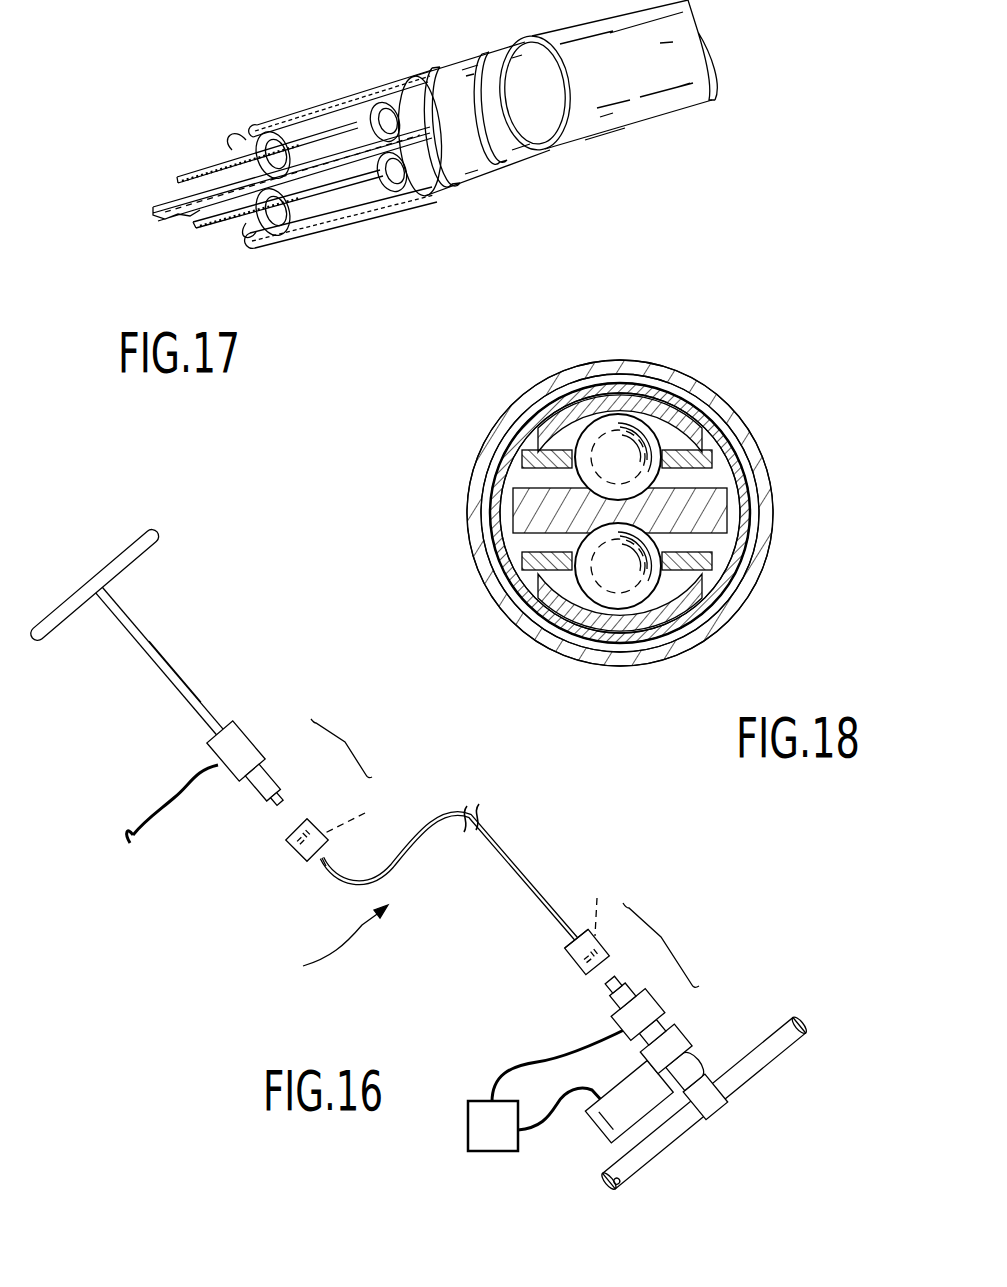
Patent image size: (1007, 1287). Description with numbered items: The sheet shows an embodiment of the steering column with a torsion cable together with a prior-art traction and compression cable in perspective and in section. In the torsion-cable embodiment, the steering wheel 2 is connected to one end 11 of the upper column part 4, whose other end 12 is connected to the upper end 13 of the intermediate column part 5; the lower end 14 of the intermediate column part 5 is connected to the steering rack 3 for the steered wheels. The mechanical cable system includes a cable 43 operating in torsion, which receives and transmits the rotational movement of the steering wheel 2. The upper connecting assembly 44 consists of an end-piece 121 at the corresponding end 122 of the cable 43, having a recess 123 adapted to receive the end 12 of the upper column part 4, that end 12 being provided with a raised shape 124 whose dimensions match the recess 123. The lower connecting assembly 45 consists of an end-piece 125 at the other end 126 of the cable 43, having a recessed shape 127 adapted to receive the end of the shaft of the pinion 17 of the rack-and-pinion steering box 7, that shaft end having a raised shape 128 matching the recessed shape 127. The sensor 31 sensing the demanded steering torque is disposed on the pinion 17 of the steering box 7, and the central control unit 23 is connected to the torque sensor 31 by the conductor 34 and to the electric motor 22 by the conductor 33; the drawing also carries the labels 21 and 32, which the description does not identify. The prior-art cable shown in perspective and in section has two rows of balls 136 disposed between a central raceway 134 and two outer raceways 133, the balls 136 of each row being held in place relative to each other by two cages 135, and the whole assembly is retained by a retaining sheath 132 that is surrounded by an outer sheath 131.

In FIG. 16, the steering wheel 2 is at (125, 555).
In FIG. 16, the steering rack 3 is at (763, 1060).
In FIG. 16, the upper column part 4 is at (152, 656).
In FIG. 16, the intermediate column part 5 is at (332, 943).
In FIG. 16, the rack-and-pinion steering box 7 is at (702, 1060).
In FIG. 16, the end of upper column part 11 is at (112, 589).
In FIG. 16, the end of upper column part 12 is at (268, 775).
In FIG. 16, the upper end of intermediate column part 13 is at (312, 825).
In FIG. 16, the lower end of intermediate column part 14 is at (710, 1105).
In FIG. 16, the pinion 17 is at (672, 1048).
In FIG. 16, the body 21 is at (240, 744).
In FIG. 16, the electric motor 22 is at (610, 1142).
In FIG. 16, the central control unit 23 is at (490, 1150).
In FIG. 16, the torque sensor 31 is at (652, 1015).
In FIG. 16, the cable 32 is at (165, 800).
In FIG. 16, the conductor 33 is at (555, 1115).
In FIG. 16, the conductor 34 is at (527, 1057).
In FIG. 16, the cable operating in torsion 43 is at (500, 840).
In FIG. 16, the upper connecting assembly 44 is at (348, 742).
In FIG. 16, the lower connecting assembly 45 is at (665, 937).
In FIG. 16, the end-piece 121 is at (290, 848).
In FIG. 16, the end of mechanical cable 122 is at (320, 858).
In FIG. 16, the recess 123 is at (361, 815).
In FIG. 16, the raised shape 124 is at (270, 796).
In FIG. 16, the end-piece 125 is at (566, 958).
In FIG. 16, the end of mechanical cable 126 is at (568, 940).
In FIG. 16, the recessed shape 127 is at (597, 903).
In FIG. 16, the raised shape 128 is at (612, 987).
In FIG. 17, the outer sheath 131 is at (640, 100).
In FIG. 18, the outer sheath 131 is at (565, 382).
In FIG. 17, the retaining sheath 132 is at (454, 70).
In FIG. 18, the retaining sheath 132 is at (748, 478).
In FIG. 17, the outer raceways 133 is at (316, 117).
In FIG. 18, the outer raceways 133 is at (655, 400).
In FIG. 17, the central raceway 134 is at (158, 207).
In FIG. 18, the central raceway 134 is at (700, 508).
In FIG. 17, the cages 135 is at (215, 168).
In FIG. 18, the cages 135 is at (530, 457).
In FIG. 17, the balls 136 is at (246, 134).
In FIG. 18, the balls 136 is at (640, 452).